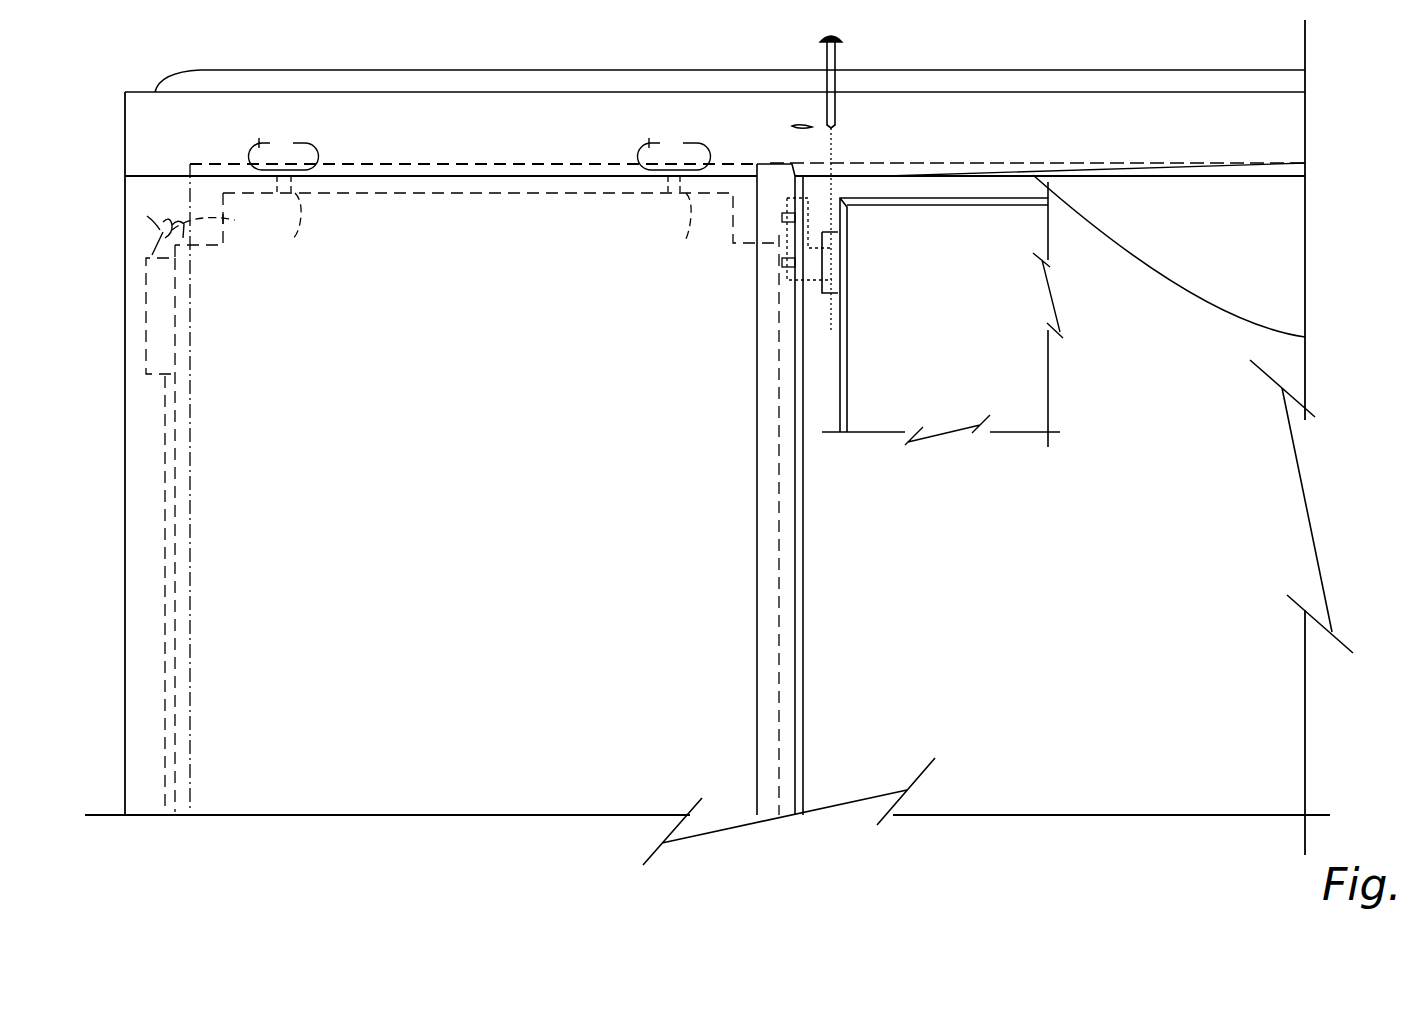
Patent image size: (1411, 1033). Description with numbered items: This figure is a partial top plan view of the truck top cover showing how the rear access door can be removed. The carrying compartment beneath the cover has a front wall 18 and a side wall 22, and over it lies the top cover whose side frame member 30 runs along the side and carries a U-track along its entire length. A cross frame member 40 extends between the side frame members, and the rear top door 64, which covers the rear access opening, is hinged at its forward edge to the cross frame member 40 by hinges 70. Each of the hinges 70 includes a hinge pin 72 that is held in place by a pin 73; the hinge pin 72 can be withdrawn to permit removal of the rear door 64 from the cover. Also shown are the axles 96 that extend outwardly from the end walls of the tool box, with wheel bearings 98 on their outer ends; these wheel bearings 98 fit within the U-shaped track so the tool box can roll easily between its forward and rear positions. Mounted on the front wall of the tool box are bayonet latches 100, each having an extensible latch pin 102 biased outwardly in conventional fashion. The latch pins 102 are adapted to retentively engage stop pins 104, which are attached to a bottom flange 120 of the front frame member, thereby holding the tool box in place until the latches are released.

The front wall 18 is at (125, 541).
The side wall 22 is at (945, 66).
The side frame member 30 is at (597, 116).
The cross frame member 40 is at (768, 478).
The rear top door 64 is at (948, 330).
The hinges 70 is at (828, 258).
The hinge pin 72 is at (842, 36).
The pin 73 is at (792, 126).
The axles 96 is at (293, 243).
The wheel bearings 98 is at (258, 127).
The bayonet latches 100 is at (150, 291).
The latch pins 102 is at (163, 222).
The stop pins 104 is at (227, 220).
The bottom flange 120 is at (147, 216).